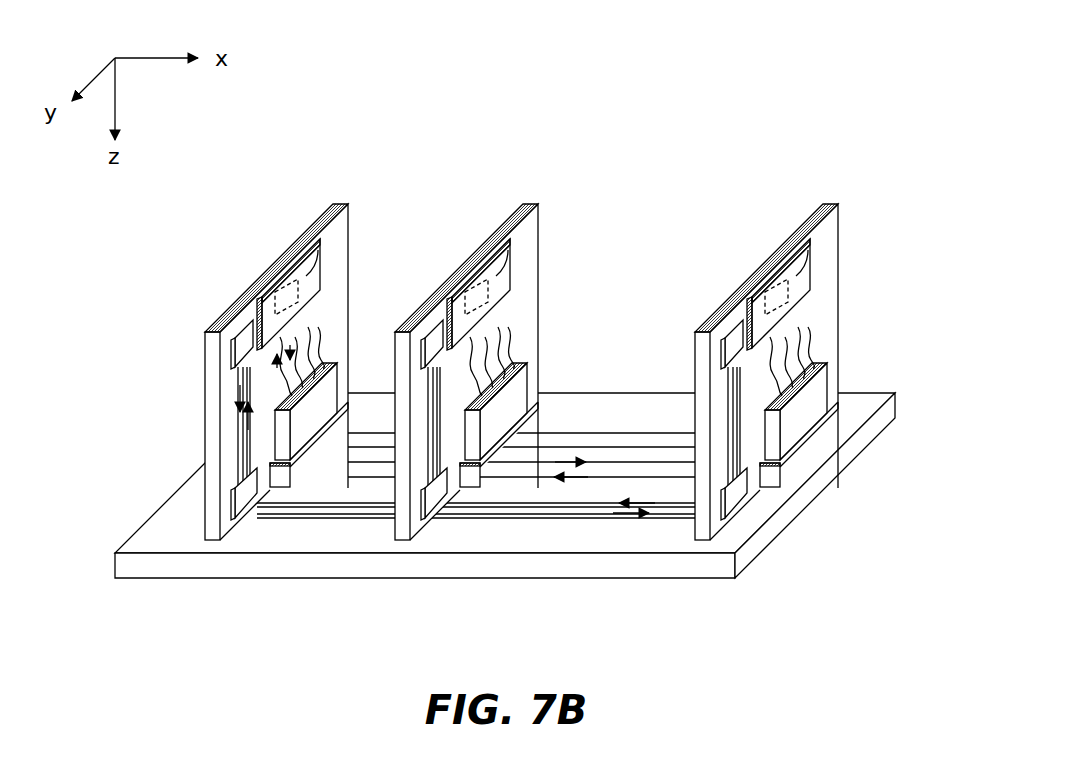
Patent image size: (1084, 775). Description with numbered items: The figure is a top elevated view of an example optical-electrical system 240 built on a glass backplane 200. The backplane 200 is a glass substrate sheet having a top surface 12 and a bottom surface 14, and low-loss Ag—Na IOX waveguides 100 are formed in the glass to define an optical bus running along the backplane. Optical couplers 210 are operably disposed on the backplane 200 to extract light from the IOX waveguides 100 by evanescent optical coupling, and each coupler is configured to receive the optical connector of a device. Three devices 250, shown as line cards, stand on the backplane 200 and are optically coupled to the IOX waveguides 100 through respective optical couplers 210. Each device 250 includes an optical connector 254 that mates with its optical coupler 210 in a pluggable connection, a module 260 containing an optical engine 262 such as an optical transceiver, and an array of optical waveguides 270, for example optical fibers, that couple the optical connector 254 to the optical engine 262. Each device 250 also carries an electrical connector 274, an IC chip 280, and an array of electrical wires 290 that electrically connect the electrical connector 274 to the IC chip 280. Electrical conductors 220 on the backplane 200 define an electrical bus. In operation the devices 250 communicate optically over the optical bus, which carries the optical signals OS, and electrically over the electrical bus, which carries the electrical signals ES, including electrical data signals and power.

The top surface 12 is at (872, 397).
The bottom surface 14 is at (833, 483).
The Ag—Na IOX waveguides 100 is at (660, 477).
The backplane 200 is at (508, 368).
The optical coupler 210 is at (348, 416).
The electrical conductors 220 is at (367, 519).
The system 240 is at (551, 357).
The device 250 is at (333, 204).
The optical connector 254 is at (336, 372).
The module 260 is at (313, 228).
The optical engine 262 is at (292, 283).
The array of optical waveguides 270 is at (329, 327).
The electrical connector 274 is at (247, 503).
The IC chip 280 is at (252, 322).
The array of electrical wires 290 is at (260, 437).
The optical signals OS is at (274, 360).
The electrical signals ES is at (237, 413).